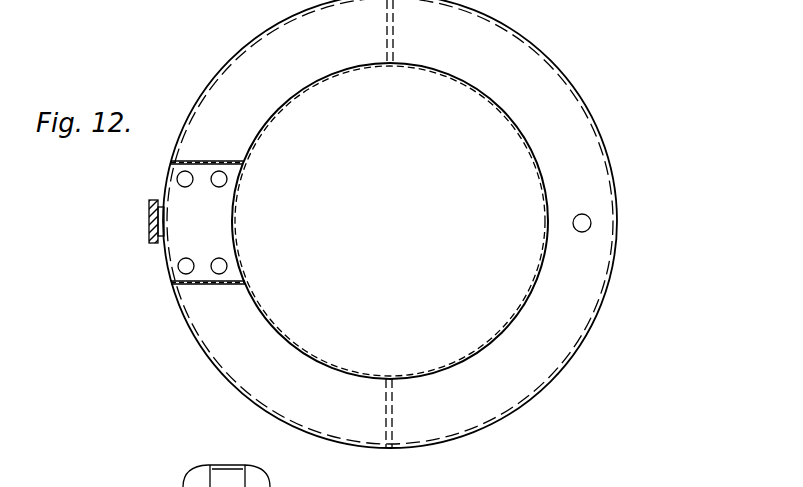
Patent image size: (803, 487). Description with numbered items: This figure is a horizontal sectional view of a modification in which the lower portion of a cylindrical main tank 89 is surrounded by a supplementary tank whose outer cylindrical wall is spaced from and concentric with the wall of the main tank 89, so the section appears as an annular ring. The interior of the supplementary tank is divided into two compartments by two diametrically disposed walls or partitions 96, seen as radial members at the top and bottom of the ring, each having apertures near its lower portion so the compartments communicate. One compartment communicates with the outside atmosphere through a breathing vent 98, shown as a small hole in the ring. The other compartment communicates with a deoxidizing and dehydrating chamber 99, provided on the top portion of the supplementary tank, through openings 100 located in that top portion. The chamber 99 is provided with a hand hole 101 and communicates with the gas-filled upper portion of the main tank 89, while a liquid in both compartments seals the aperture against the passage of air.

The main tank 89 is at (524, 306).
The walls or partitions 96 is at (394, 42).
The breathing vent 98 is at (584, 222).
The deoxidizing and dehydrating chamber 99 is at (210, 218).
The openings 100 is at (219, 176).
The hand hole 101 is at (152, 224).